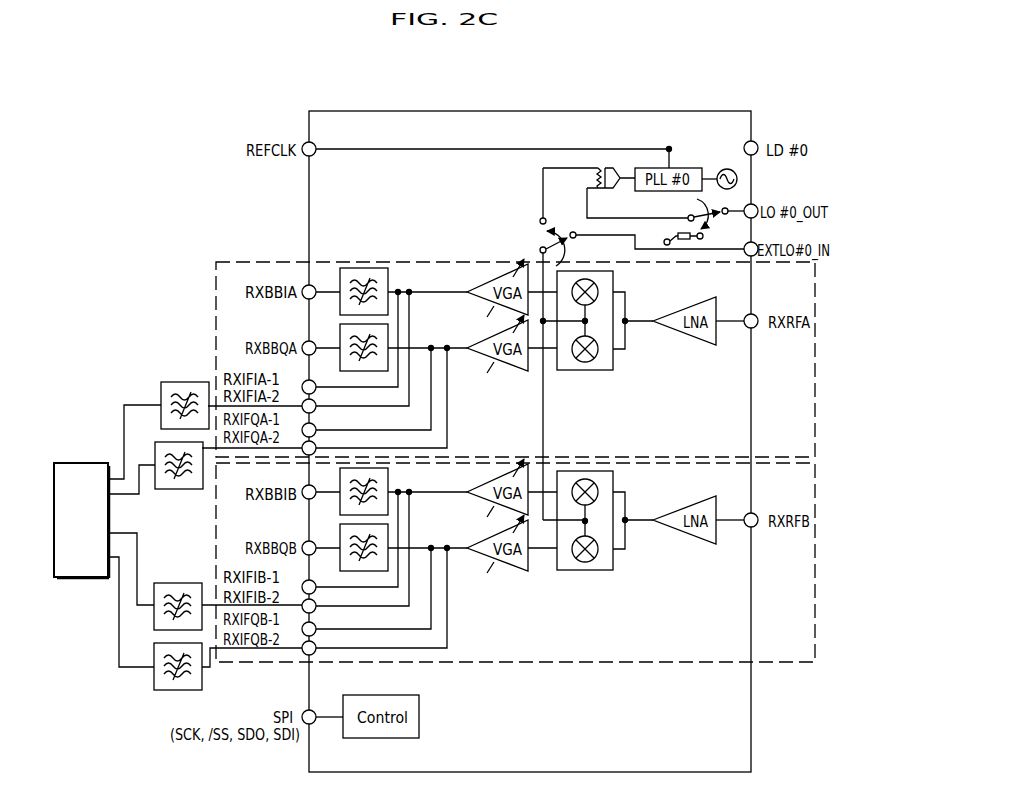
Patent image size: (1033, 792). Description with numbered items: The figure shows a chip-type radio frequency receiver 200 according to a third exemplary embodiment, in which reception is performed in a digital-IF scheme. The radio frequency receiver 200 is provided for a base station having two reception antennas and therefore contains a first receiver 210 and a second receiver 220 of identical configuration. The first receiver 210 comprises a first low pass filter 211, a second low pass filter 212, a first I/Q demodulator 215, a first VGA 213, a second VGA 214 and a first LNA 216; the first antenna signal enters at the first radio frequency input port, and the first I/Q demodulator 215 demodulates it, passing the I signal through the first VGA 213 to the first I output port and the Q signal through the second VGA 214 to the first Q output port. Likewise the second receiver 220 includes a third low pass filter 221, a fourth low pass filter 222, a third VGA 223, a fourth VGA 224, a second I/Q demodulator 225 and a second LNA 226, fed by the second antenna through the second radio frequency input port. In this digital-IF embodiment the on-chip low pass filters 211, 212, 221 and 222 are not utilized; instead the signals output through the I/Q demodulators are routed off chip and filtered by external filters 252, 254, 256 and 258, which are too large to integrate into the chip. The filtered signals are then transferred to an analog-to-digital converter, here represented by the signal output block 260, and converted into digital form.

The radio frequency receiver 200 is at (650, 111).
The first receiver 210 is at (216, 299).
The first low pass filter 211 is at (362, 268).
The second low pass filter 212 is at (388, 337).
The first VGA 213 is at (500, 271).
The second VGA 214 is at (520, 371).
The first I/Q demodulator 215 is at (582, 370).
The first LNA 216 is at (690, 342).
The second receiver 220 is at (216, 533).
The third low pass filter 221 is at (388, 478).
The fourth low pass filter 222 is at (388, 530).
The third VGA 223 is at (481, 501).
The fourth VGA 224 is at (520, 571).
The second I/Q demodulator 225 is at (582, 570).
The second LNA 226 is at (683, 542).
The external filter 252 is at (183, 382).
The external filter 254 is at (177, 490).
The external filter 256 is at (177, 583).
The external filter 258 is at (187, 690).
The signal output unit 260 is at (79, 463).